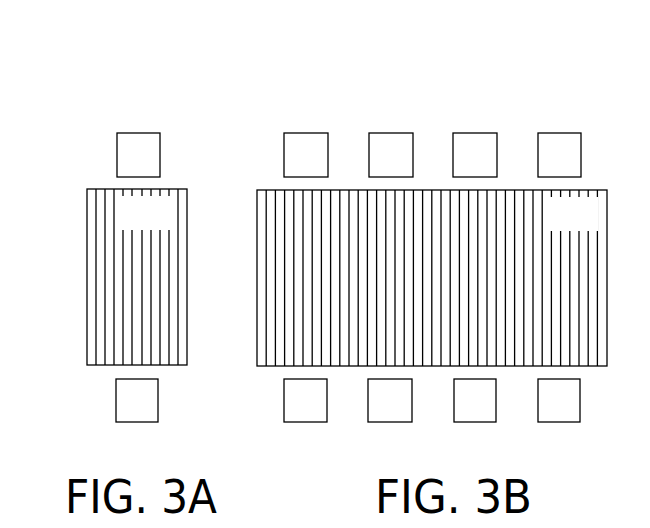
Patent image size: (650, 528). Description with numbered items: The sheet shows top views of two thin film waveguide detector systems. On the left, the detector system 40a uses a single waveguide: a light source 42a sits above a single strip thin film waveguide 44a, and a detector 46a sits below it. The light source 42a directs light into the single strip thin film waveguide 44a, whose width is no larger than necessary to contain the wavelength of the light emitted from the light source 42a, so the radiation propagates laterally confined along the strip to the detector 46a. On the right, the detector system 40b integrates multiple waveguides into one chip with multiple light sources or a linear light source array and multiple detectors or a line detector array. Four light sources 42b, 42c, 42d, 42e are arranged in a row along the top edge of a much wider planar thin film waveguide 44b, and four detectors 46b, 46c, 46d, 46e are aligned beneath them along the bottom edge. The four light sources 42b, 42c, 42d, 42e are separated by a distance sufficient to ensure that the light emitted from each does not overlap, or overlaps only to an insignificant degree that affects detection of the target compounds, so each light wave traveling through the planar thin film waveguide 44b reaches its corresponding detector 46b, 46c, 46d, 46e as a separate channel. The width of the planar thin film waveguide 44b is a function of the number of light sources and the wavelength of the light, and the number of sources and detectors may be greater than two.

In FIG. 3A, the detector system 40a is at (119, 92).
In FIG. 3B, the detector system 40b is at (284, 94).
In FIG. 3A, the light source 42a is at (138, 133).
In FIG. 3B, the light source 42b is at (307, 133).
In FIG. 3B, the light source 42c is at (392, 133).
In FIG. 3B, the light source 42d is at (476, 133).
In FIG. 3B, the light source 42e is at (560, 133).
In FIG. 3A, the single strip thin film waveguide 44a is at (137, 277).
In FIG. 3B, the planar thin film waveguide 44b is at (432, 278).
In FIG. 3A, the detector 46a is at (137, 422).
In FIG. 3B, the detector 46b is at (303, 422).
In FIG. 3B, the detector 46c is at (388, 422).
In FIG. 3B, the detector 46d is at (473, 422).
In FIG. 3B, the detector 46e is at (557, 422).